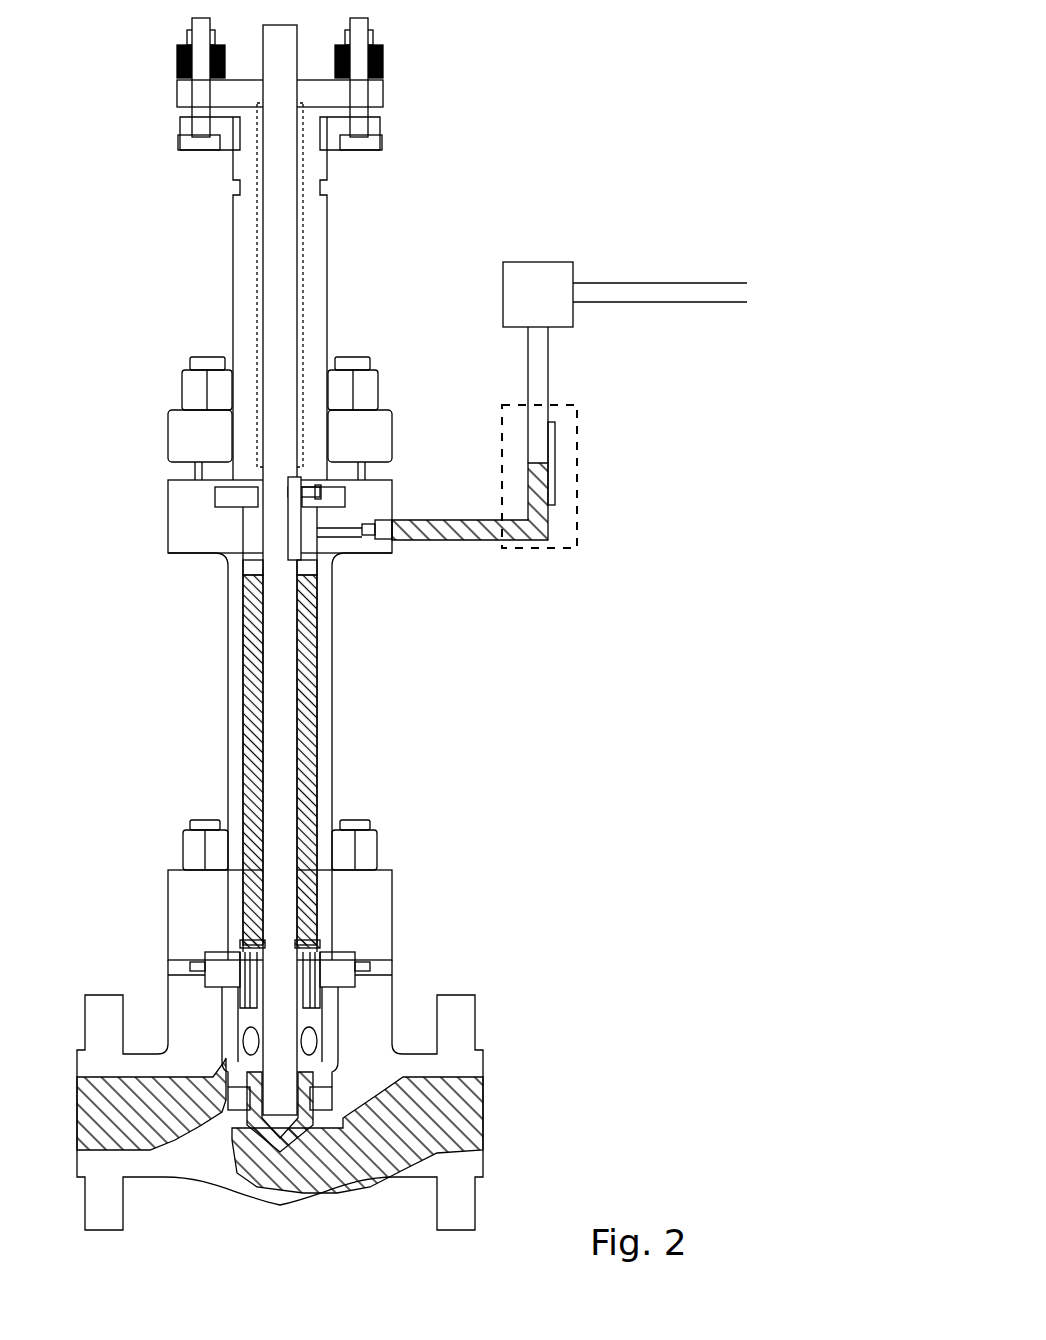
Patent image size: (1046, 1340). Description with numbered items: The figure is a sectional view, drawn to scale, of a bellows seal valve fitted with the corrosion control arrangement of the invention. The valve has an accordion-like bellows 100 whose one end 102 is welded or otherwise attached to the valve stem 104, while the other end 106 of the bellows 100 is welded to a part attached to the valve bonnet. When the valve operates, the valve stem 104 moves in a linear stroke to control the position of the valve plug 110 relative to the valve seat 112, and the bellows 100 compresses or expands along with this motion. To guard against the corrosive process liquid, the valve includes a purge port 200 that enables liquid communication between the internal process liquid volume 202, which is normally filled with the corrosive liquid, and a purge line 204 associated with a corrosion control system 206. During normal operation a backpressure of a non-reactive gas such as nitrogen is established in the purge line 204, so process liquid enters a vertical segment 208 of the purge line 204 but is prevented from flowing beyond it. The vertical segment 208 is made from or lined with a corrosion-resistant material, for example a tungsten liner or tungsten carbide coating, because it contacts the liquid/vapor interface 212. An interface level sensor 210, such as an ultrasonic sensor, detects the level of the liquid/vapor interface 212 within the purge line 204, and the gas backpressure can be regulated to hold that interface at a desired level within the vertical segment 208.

The bellows 100 is at (318, 728).
The one end of the bellows 102 is at (242, 935).
The valve stem 104 is at (275, 728).
The other end of the bellows 106 is at (243, 588).
The valve plug 110 is at (357, 1135).
The valve seat 112 is at (355, 1115).
The purge port 200 is at (392, 518).
The internal process liquid volume 202 is at (318, 605).
The purge line 204 is at (458, 540).
The corrosion control system 206 is at (503, 298).
The vertical segment 208 is at (577, 530).
The interface level sensor 210 is at (555, 475).
The liquid/vapor interface 212 is at (537, 463).